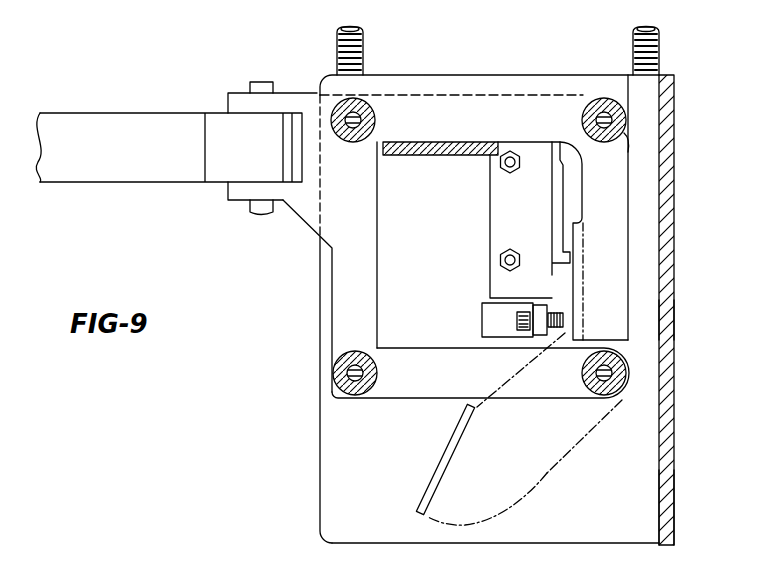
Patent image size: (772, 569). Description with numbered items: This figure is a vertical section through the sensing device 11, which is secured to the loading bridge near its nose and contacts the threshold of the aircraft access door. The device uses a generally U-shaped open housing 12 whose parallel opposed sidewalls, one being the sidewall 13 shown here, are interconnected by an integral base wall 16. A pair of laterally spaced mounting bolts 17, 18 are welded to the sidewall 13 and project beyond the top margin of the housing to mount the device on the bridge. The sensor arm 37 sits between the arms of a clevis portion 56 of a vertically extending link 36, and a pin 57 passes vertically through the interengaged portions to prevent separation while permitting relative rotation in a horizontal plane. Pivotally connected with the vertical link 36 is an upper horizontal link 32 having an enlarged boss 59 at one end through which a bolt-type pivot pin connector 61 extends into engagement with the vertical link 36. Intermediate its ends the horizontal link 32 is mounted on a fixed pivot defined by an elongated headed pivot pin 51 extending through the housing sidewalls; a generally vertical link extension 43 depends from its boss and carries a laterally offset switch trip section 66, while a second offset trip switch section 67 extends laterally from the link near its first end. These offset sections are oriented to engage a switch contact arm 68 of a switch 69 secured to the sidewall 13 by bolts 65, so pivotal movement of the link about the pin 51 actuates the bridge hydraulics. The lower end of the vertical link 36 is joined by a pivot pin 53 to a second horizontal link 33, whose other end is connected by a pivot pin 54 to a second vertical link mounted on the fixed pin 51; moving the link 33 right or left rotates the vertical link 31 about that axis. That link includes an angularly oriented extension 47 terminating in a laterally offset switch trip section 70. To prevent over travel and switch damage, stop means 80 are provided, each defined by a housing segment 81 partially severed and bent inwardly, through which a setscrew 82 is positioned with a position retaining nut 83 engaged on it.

The sensing device 11 is at (686, 128).
The open housing 12 is at (676, 497).
The sidewall 13 is at (630, 530).
The base wall 16 is at (672, 318).
The mounting bolt 17 is at (360, 50).
The mounting bolt 18 is at (660, 50).
The vertical link 31 is at (585, 437).
The upper horizontal link 32 is at (486, 100).
The second horizontal link 33 is at (407, 388).
The vertical link 36 is at (331, 295).
The sensor arm 37 is at (134, 90).
The link extension 43 is at (626, 270).
The angularly oriented extension 47 is at (553, 458).
The pivot pin 51 is at (598, 110).
The pivot pin 53 is at (340, 376).
The pivot pin 54 is at (616, 372).
The clevis portion 56 is at (228, 101).
The pin 57 is at (260, 82).
The enlarged boss 59 is at (364, 102).
The pivot pin connector 61 is at (375, 124).
The bolts 65 is at (501, 168).
The switch trip section 66 is at (578, 237).
The second offset trip switch section 67 is at (418, 150).
The switch contact arm 68 is at (558, 257).
The switch 69 is at (494, 228).
The switch trip section 70 is at (432, 478).
The stop means 80 is at (477, 322).
The housing segment 81 is at (553, 333).
The setscrew 82 is at (524, 331).
The position retaining nut 83 is at (538, 336).